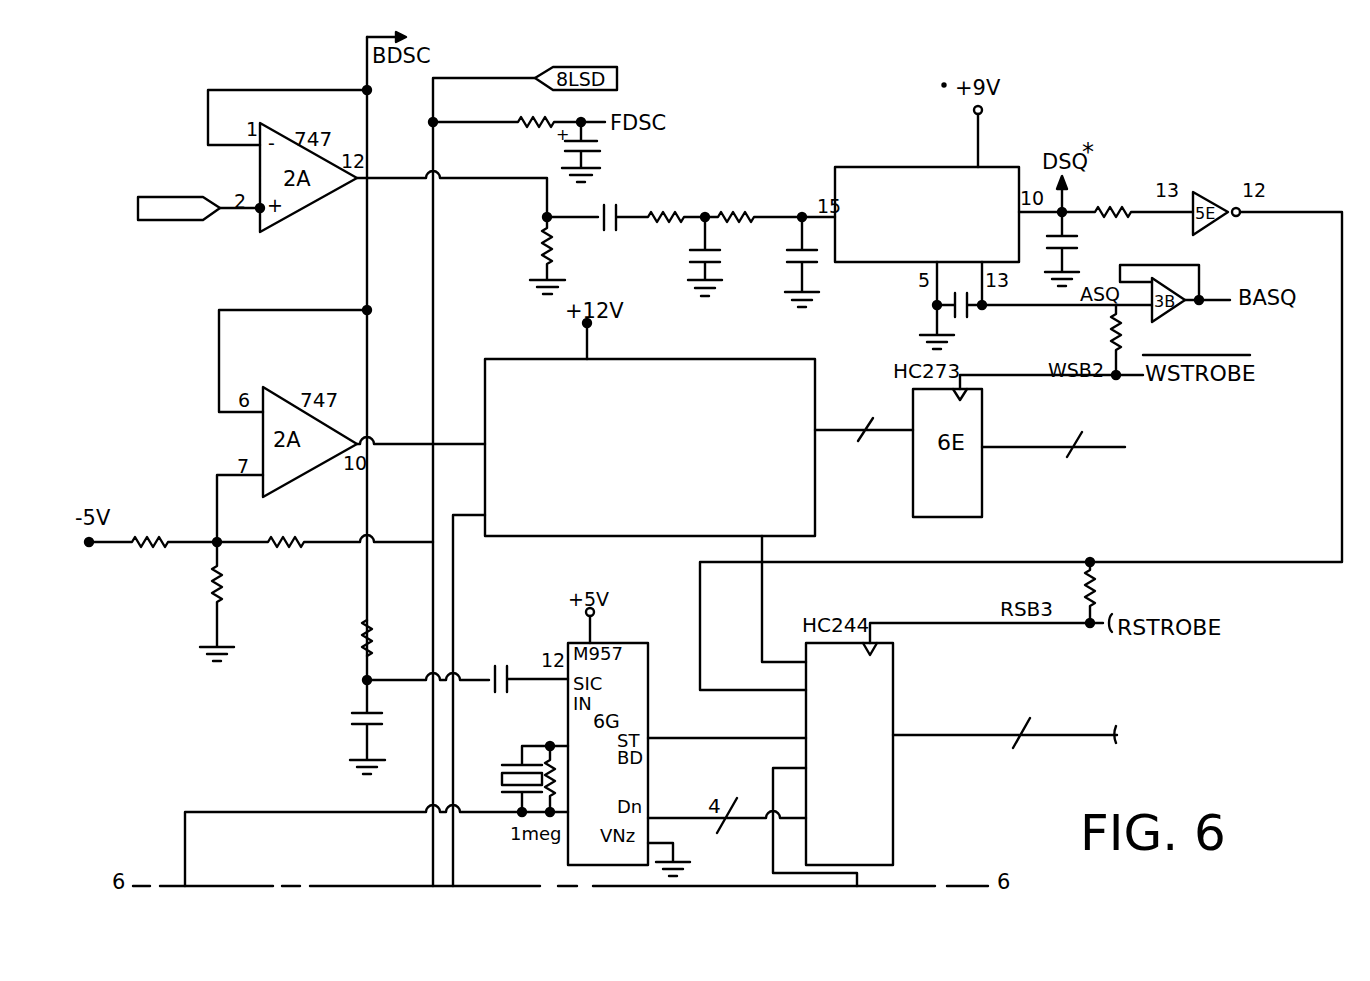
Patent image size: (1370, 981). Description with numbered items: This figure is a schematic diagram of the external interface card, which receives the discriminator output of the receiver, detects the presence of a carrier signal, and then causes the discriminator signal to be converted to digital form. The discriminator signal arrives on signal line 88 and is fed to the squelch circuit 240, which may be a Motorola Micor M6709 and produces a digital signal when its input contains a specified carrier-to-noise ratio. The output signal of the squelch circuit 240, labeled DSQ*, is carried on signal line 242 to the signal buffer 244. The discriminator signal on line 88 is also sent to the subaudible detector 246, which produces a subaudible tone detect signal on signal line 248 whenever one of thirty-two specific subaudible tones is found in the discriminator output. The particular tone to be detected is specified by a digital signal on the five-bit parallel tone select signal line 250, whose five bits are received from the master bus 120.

The signal line 88 is at (225, 209).
The squelch circuit 240 is at (870, 167).
The signal line 242 is at (1266, 563).
The signal buffer 244 is at (895, 692).
The subaudible detector 246 is at (520, 357).
The signal line 248 is at (457, 596).
The tone select signal line 250 is at (840, 436).
The master bus 120 is at (997, 446).